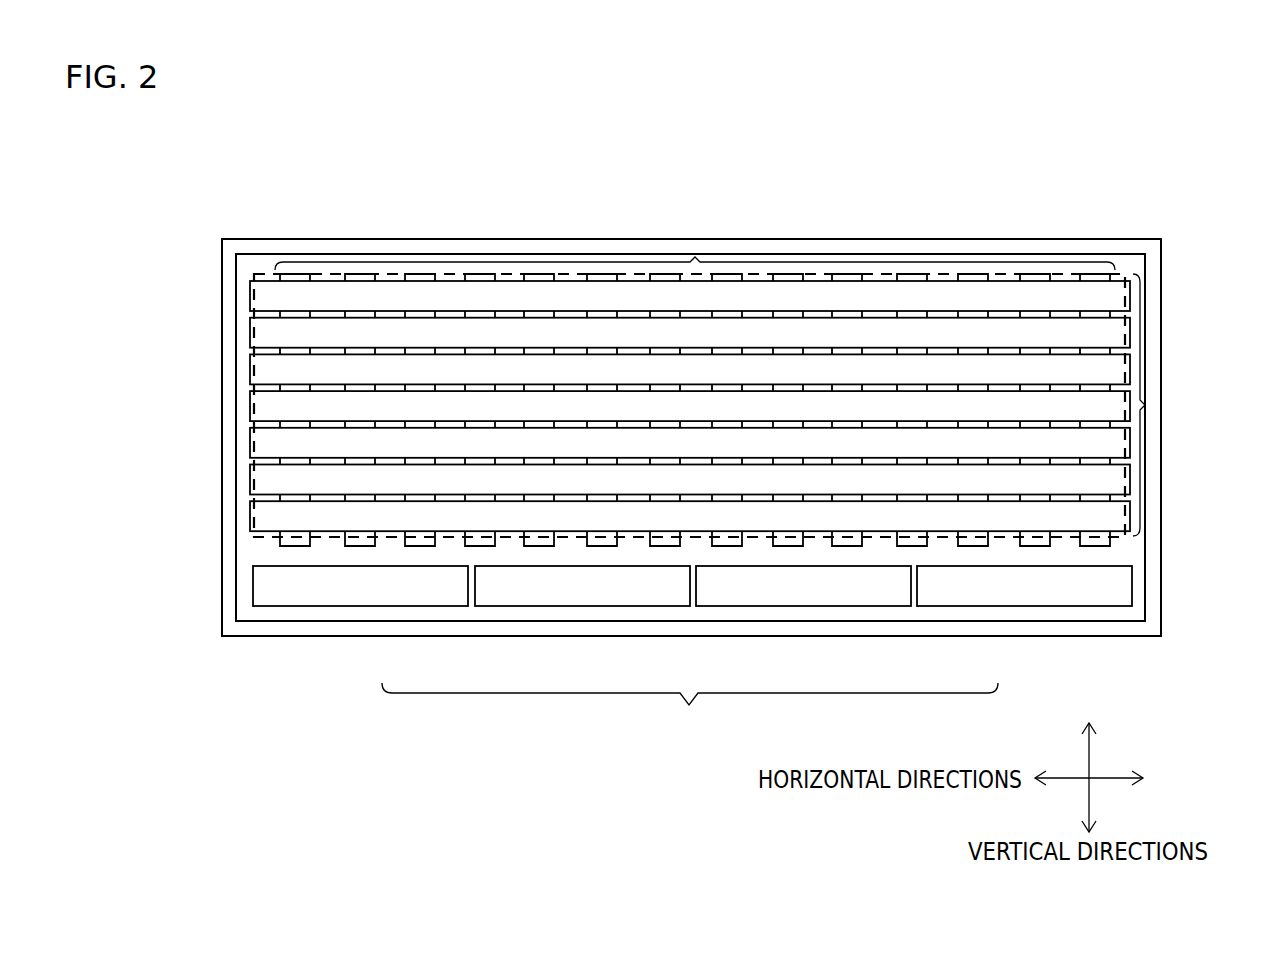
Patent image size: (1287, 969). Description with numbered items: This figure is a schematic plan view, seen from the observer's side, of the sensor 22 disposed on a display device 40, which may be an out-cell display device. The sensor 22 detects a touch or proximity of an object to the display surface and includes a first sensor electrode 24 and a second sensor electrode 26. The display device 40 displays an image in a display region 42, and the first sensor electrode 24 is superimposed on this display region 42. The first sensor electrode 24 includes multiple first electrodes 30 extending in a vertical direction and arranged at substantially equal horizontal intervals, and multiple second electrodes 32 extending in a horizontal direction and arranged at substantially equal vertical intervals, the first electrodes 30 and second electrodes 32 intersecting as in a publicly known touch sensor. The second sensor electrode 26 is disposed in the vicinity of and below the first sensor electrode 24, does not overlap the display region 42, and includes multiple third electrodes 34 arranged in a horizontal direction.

The sensor 22 is at (258, 253).
The first sensor electrode 24 is at (764, 360).
The second sensor electrode 26 is at (690, 716).
The first electrodes 30 is at (695, 258).
The second electrodes 32 is at (1146, 405).
The third electrodes 34 is at (417, 606).
The display device 40 is at (248, 638).
The display region 42 is at (873, 273).